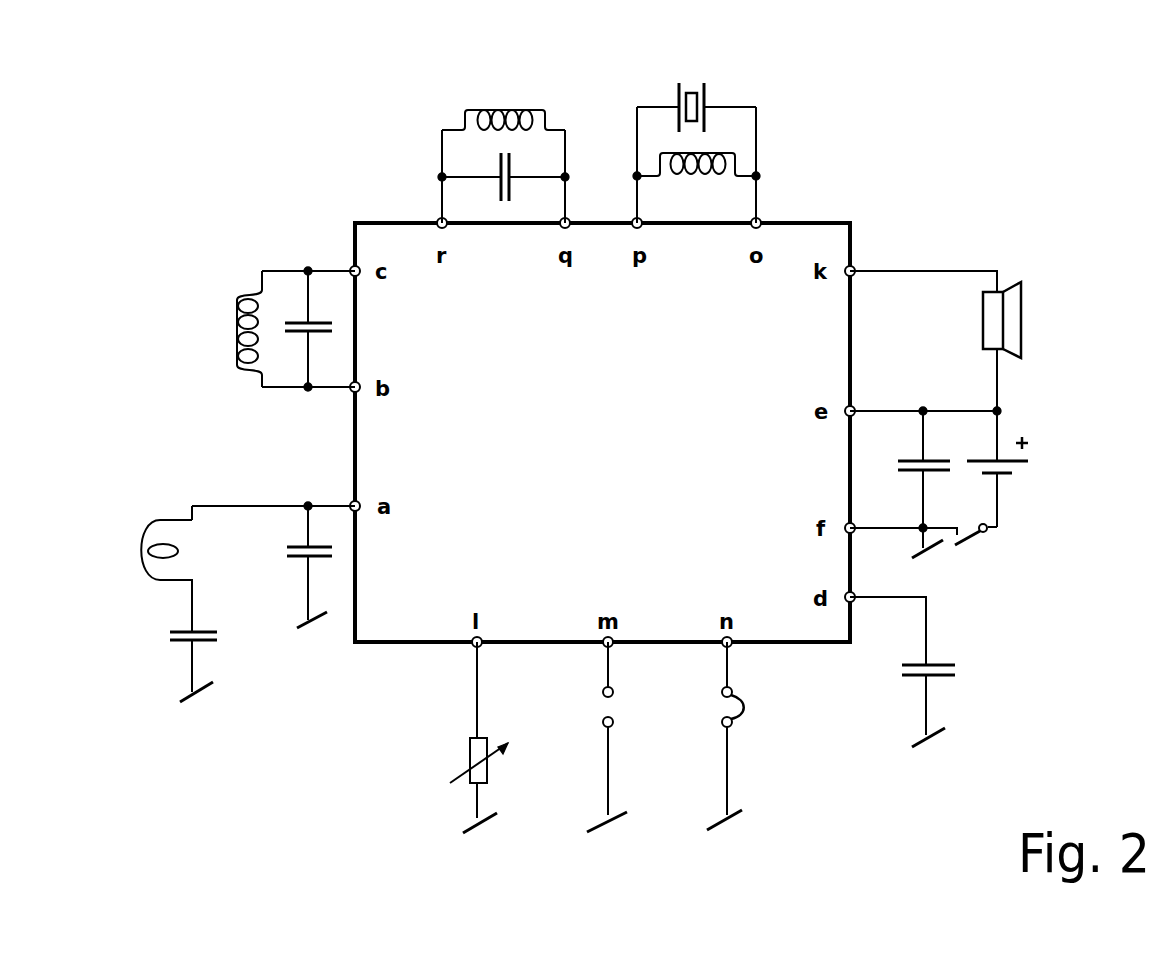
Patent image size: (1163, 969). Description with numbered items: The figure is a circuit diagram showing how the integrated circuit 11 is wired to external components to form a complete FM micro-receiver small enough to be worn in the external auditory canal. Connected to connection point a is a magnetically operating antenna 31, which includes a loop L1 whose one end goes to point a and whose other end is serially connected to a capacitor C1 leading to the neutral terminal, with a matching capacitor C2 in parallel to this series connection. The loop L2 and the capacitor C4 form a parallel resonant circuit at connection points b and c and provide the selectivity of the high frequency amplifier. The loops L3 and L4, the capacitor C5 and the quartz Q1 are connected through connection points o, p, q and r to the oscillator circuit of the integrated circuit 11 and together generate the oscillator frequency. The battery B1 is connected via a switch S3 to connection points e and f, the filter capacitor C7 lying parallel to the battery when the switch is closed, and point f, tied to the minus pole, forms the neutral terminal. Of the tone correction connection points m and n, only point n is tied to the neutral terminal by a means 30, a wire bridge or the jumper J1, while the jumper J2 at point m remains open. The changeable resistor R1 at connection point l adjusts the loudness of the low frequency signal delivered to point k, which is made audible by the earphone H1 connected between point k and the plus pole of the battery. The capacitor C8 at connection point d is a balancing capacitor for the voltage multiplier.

The integrated circuit 11 is at (603, 414).
The loop L1 is at (145, 565).
The loop L2 is at (240, 329).
The loop L3 is at (503, 108).
The loop L4 is at (730, 152).
The capacitor C1 is at (172, 630).
The matching capacitor C2 is at (290, 557).
The capacitor C4 is at (300, 318).
The capacitor C5 is at (498, 165).
The filter capacitor C7 is at (919, 460).
The capacitor C8 is at (942, 663).
The quartz Q1 is at (690, 82).
The earphone H1 is at (1013, 316).
The battery B1 is at (1020, 465).
The switch S3 is at (972, 538).
The changeable resistor R1 is at (470, 746).
The jumper J1 is at (722, 708).
The jumper J2 is at (602, 708).
The means 30 is at (746, 708).
The magnetically operating antenna 31 is at (153, 518).